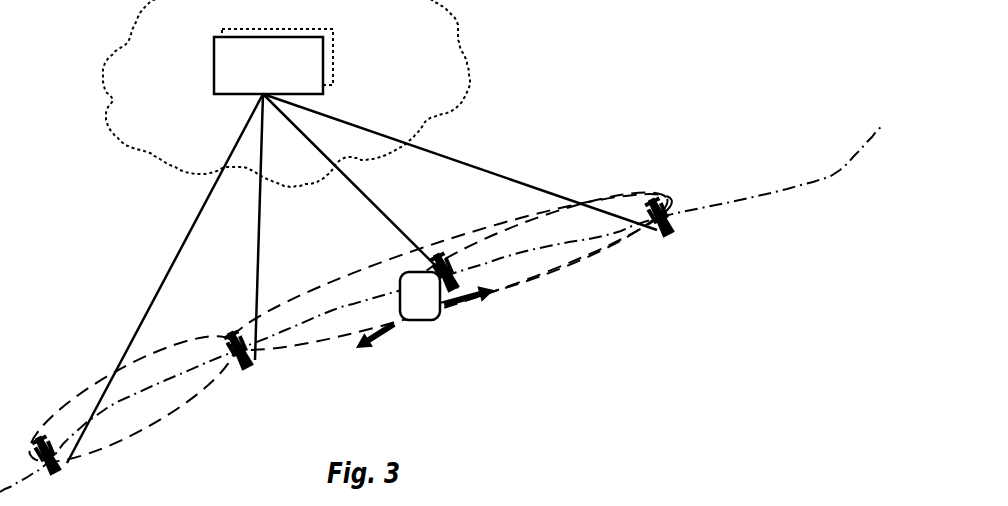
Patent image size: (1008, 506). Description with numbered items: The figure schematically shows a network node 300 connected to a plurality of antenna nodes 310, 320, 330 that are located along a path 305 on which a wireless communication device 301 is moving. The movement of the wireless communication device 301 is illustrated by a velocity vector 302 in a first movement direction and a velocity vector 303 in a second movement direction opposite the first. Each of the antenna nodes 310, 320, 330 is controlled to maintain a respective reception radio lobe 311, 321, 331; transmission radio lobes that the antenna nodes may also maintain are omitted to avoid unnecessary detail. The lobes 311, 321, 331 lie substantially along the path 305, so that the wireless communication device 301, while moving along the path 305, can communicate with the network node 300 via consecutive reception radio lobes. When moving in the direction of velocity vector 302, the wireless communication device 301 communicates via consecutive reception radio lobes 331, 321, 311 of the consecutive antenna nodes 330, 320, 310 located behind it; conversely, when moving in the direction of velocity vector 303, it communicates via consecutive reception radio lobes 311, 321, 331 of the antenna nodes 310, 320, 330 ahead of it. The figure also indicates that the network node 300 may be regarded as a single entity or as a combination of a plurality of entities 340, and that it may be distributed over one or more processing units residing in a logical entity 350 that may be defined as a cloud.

The network node 300 is at (214, 77).
The plurality of entities 340 is at (333, 66).
The logical entity 350 is at (470, 80).
The wireless communication device 301 is at (427, 320).
The velocity vector 302 is at (372, 346).
The velocity vector 303 is at (470, 303).
The path 305 is at (756, 198).
The antenna node 310 is at (230, 328).
The reception radio lobe 311 is at (183, 403).
The antenna node 320 is at (445, 255).
The reception radio lobe 321 is at (343, 266).
The antenna node 330 is at (652, 199).
The reception radio lobe 331 is at (595, 257).